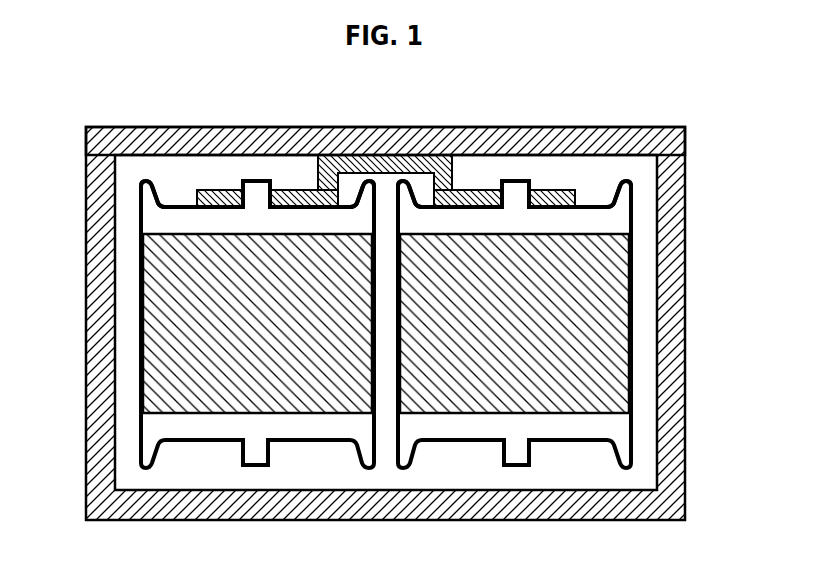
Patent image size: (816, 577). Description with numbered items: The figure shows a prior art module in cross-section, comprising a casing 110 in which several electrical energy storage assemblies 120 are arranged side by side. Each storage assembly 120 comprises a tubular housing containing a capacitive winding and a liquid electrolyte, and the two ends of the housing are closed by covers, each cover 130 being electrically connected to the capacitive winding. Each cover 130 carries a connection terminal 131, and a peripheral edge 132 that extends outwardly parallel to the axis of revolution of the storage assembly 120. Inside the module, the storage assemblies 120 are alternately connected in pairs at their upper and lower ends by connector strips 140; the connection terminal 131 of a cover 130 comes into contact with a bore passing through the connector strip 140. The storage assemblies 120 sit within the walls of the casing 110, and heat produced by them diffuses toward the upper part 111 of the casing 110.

The casing 110 is at (668, 308).
The upper part of the casing 111 is at (588, 140).
The electrical energy storage assembly 120 is at (242, 333).
The cover 130 is at (182, 222).
The connection terminal 131 is at (258, 186).
The peripheral edge 132 is at (147, 191).
The connector strip 140 is at (350, 170).